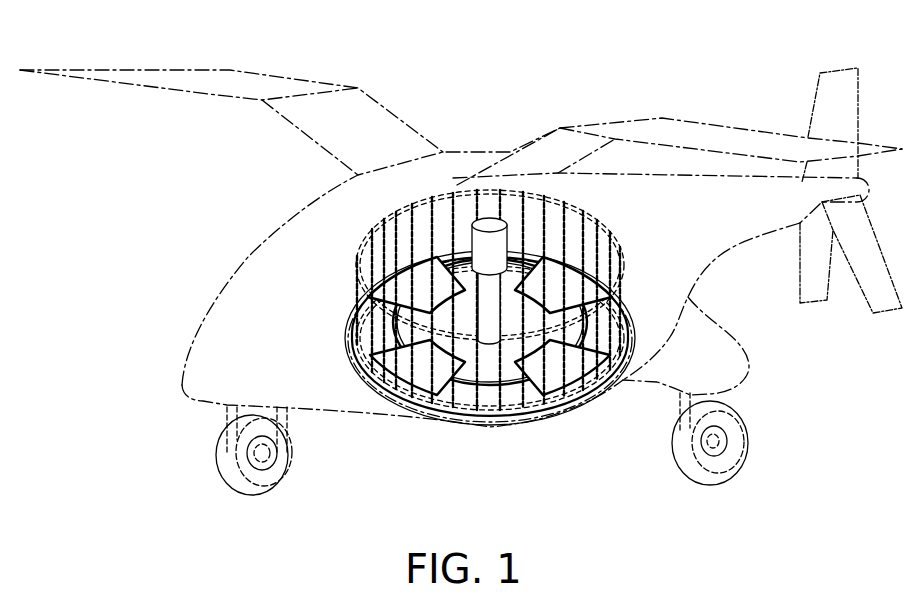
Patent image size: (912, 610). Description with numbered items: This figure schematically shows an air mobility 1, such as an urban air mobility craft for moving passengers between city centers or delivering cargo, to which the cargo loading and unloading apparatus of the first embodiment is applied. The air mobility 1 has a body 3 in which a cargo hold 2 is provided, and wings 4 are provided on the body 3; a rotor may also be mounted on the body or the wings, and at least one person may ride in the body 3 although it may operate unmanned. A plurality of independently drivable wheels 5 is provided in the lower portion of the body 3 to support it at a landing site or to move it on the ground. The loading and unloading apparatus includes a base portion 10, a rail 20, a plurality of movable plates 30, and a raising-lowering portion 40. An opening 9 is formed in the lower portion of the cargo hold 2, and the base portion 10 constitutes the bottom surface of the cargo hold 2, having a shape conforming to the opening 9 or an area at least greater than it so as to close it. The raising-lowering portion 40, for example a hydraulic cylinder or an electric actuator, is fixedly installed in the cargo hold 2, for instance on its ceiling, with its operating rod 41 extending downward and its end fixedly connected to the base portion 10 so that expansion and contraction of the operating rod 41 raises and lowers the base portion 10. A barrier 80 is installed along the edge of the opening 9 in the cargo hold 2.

The air mobility 1 is at (461, 255).
The cargo hold 2 is at (427, 190).
The body 3 is at (265, 247).
The wings 4 is at (258, 80).
The wheels 5 is at (222, 460).
The opening 9 is at (392, 403).
The base portion 10 is at (490, 400).
The rail 20 is at (512, 390).
The movable plates 30 is at (550, 383).
The raising-lowering portion 40 is at (473, 242).
The operating rod 41 is at (483, 312).
The barrier 80 is at (540, 197).